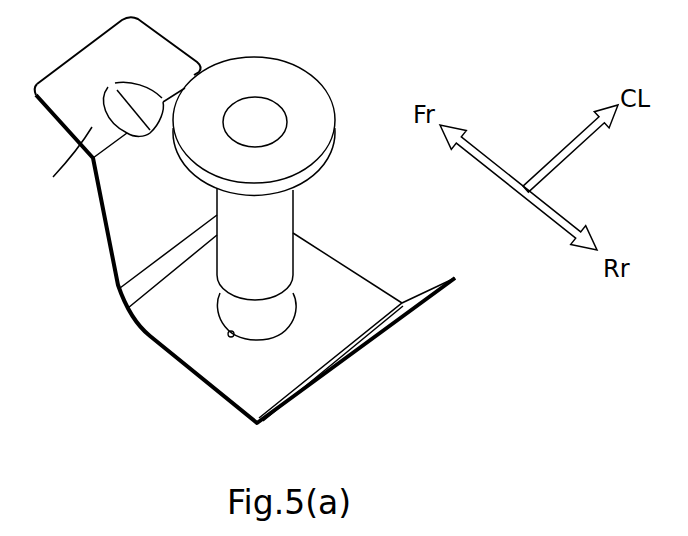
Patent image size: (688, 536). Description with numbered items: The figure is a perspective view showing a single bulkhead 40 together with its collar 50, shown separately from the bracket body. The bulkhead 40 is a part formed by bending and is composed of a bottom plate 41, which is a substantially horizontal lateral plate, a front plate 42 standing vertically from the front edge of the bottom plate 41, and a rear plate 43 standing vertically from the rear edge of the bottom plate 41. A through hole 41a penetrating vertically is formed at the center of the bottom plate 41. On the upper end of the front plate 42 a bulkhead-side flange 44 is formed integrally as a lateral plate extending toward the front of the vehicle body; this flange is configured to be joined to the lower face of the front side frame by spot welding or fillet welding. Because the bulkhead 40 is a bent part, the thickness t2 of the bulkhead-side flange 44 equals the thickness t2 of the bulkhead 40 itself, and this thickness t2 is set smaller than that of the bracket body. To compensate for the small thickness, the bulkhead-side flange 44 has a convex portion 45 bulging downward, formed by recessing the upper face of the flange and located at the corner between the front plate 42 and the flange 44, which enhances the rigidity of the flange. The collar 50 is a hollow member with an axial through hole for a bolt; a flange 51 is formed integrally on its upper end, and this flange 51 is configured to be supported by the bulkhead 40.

The bulkhead 40 is at (245, 225).
The bottom plate 41 is at (167, 323).
The through hole 41a is at (227, 340).
The front plate 42 is at (143, 239).
The rear plate 43 is at (347, 362).
The bulkhead-side flange 44 is at (92, 158).
The convex portion 45 is at (140, 137).
The collar 50 is at (287, 175).
The flange 51 is at (303, 82).
The thickness t2 is at (66, 157).